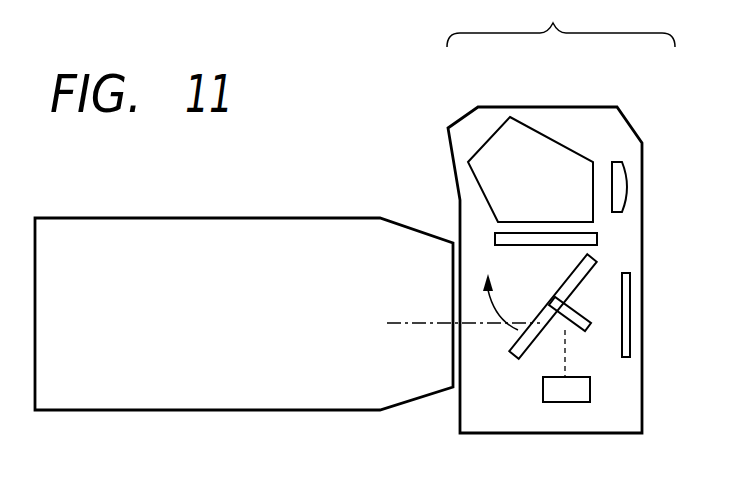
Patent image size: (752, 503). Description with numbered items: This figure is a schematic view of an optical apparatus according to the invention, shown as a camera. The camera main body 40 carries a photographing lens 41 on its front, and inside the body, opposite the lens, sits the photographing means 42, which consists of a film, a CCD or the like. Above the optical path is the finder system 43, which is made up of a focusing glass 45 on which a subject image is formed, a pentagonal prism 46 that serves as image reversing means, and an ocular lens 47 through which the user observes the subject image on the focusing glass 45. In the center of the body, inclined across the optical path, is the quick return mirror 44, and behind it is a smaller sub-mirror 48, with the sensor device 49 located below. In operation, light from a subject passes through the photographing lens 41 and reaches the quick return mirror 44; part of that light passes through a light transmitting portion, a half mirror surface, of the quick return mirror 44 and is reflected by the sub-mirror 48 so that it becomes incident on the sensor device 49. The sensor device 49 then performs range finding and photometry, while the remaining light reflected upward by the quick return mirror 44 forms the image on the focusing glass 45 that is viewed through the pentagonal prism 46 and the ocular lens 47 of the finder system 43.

The camera main body 40 is at (643, 393).
The photographing lens 41 is at (332, 218).
The photographing means 42 is at (631, 293).
The finder system 43 is at (561, 23).
The quick return mirror 44 is at (527, 358).
The focusing glass 45 is at (518, 233).
The pentagonal prism 46 is at (546, 133).
The ocular lens 47 is at (618, 162).
The sub-mirror 48 is at (580, 317).
The sensor device 49 is at (573, 402).